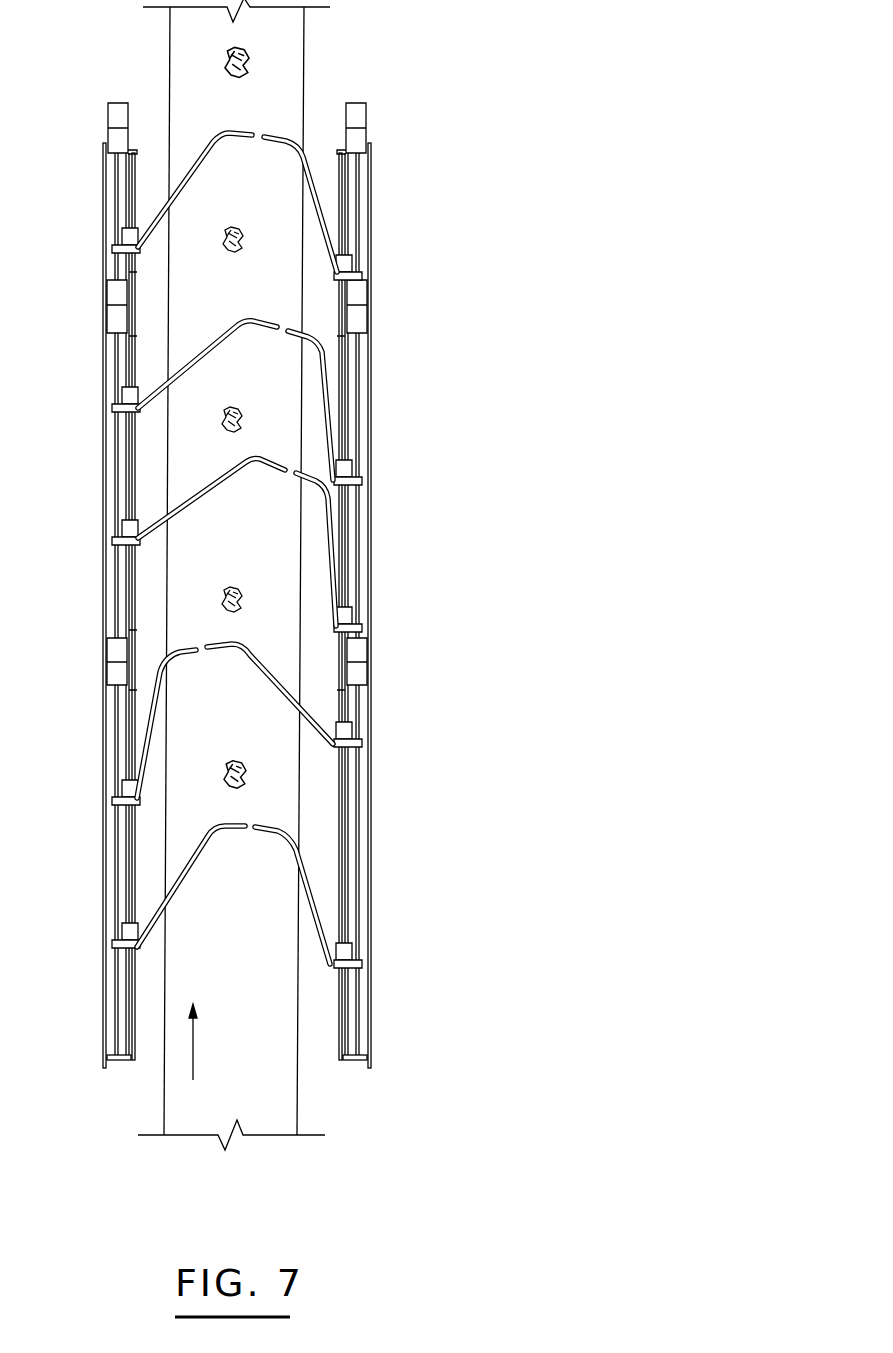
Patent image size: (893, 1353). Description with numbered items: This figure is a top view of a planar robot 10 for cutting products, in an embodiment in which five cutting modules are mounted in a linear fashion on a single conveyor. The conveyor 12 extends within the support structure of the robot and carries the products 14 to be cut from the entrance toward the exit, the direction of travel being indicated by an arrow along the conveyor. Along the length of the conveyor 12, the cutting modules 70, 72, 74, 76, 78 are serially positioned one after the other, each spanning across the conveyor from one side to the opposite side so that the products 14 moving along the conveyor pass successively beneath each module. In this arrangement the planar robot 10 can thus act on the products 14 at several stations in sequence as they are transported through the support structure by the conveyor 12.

The planar robot 10 is at (434, 605).
The conveyor 12 is at (386, 49).
The products 14 is at (222, 60).
The cutting module 70 is at (329, 214).
The cutting module 72 is at (329, 391).
The cutting module 74 is at (332, 552).
The cutting module 76 is at (293, 693).
The cutting module 78 is at (305, 882).